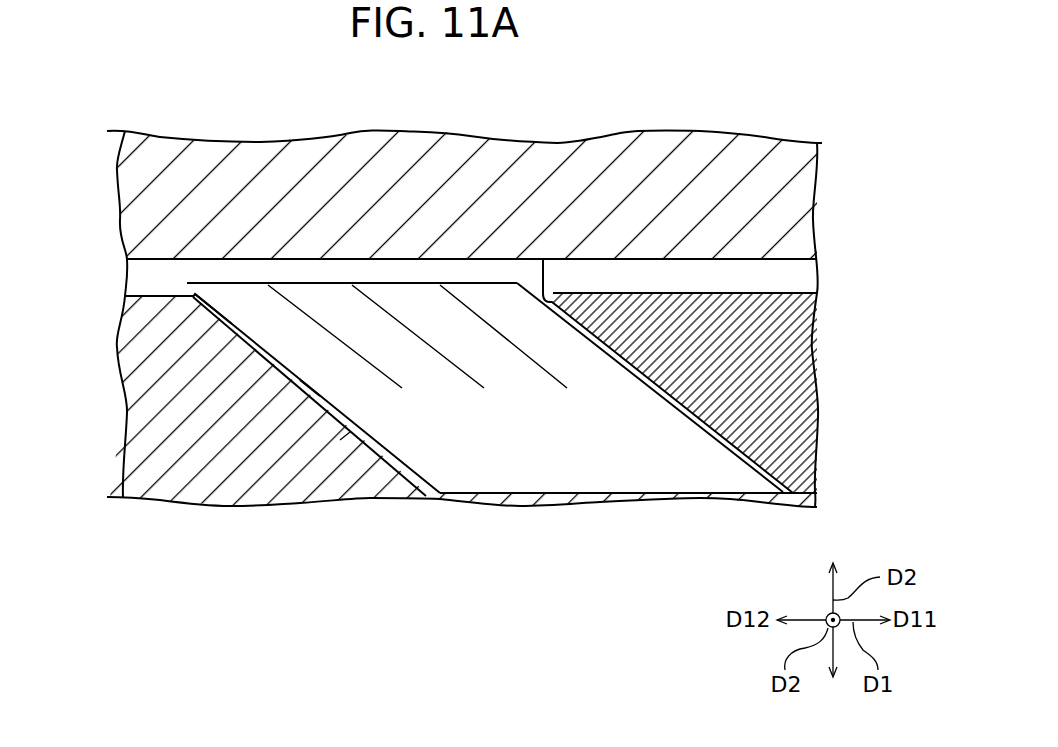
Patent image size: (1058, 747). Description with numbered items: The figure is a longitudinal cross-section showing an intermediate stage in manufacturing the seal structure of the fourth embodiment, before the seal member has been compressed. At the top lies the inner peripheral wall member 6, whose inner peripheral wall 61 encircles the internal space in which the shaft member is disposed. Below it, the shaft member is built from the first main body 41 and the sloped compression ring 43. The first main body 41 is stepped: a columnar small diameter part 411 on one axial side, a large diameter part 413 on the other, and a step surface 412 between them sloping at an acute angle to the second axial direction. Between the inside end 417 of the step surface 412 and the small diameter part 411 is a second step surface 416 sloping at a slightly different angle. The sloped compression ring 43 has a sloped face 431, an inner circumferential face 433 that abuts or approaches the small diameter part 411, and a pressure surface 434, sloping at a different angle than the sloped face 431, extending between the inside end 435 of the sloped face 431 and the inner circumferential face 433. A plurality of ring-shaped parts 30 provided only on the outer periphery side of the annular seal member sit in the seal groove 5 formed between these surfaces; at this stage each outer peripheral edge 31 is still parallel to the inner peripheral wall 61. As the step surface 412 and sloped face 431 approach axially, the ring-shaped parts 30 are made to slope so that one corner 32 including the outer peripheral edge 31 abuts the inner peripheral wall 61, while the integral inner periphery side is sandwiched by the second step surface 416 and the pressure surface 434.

The seal groove 5 is at (447, 508).
The inner peripheral wall member 6 is at (333, 155).
The ring-shaped part 30 is at (247, 290).
The outer peripheral edge 31 is at (402, 283).
The corner 32 is at (195, 294).
The first main body 41 is at (107, 399).
The sloped compression ring 43 is at (818, 350).
The inner peripheral wall 61 is at (740, 272).
The small diameter part 411 is at (431, 492).
The step surface 412 is at (260, 353).
The large diameter part 413 is at (150, 296).
The second step surface 416 is at (350, 432).
The inside end 417 is at (288, 388).
The sloped face 431 is at (567, 258).
The inner circumferential face 433 is at (800, 498).
The pressure surface 434 is at (684, 412).
The inside end 435 is at (643, 388).